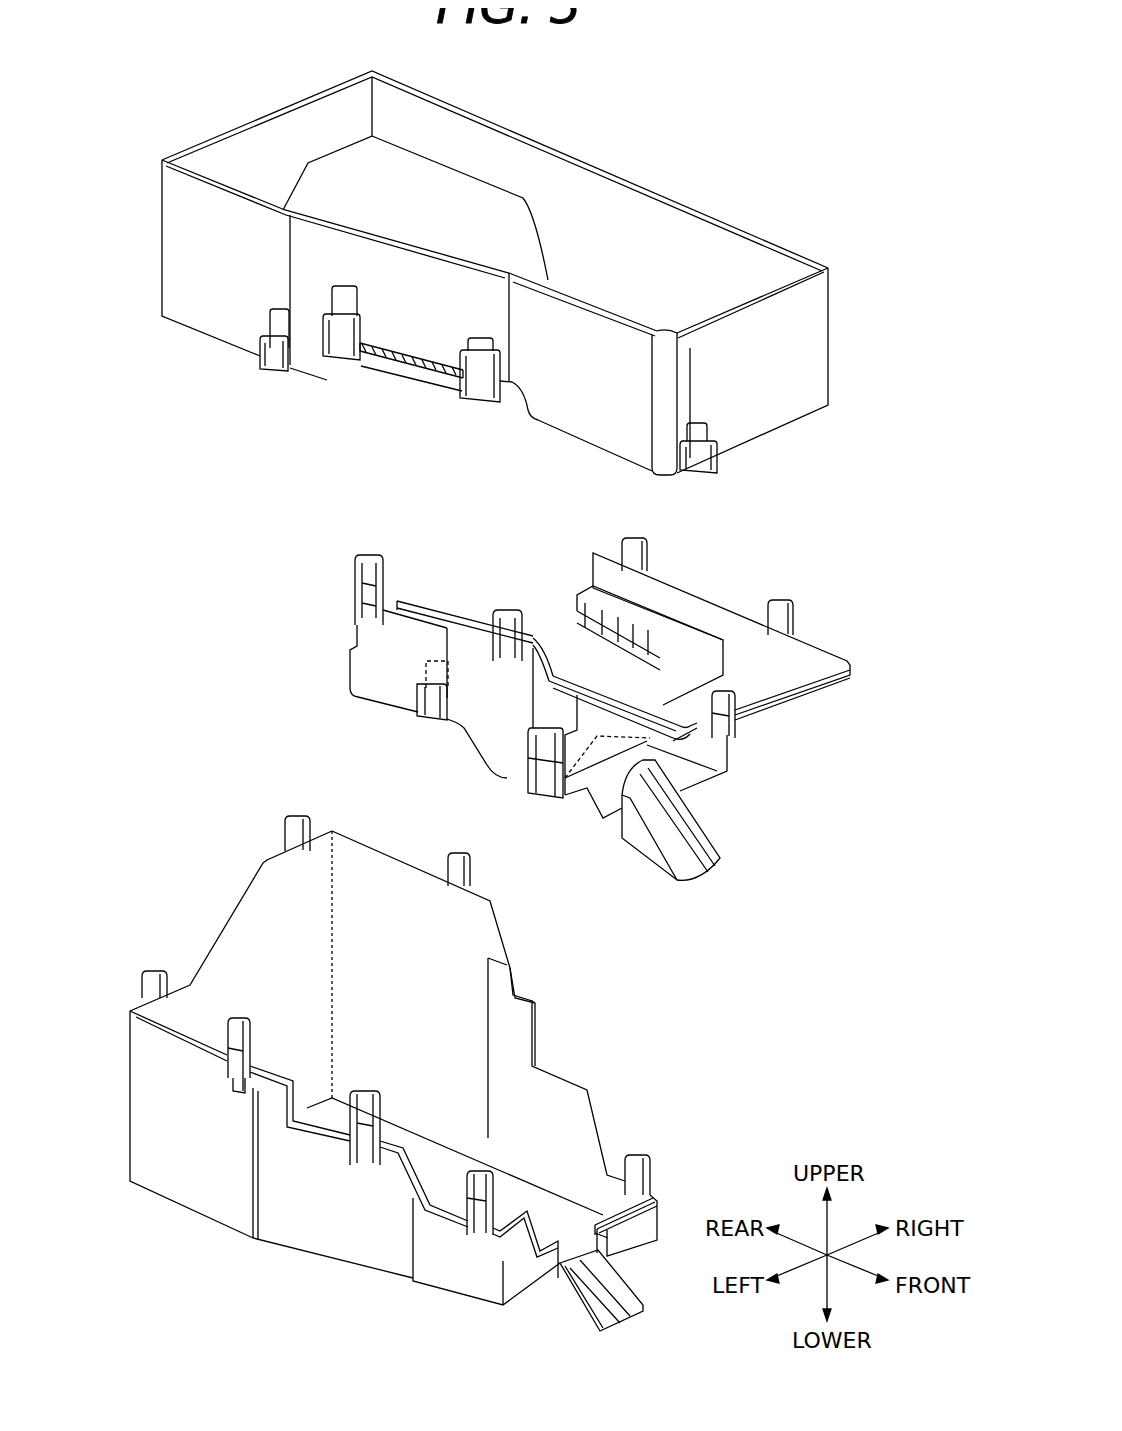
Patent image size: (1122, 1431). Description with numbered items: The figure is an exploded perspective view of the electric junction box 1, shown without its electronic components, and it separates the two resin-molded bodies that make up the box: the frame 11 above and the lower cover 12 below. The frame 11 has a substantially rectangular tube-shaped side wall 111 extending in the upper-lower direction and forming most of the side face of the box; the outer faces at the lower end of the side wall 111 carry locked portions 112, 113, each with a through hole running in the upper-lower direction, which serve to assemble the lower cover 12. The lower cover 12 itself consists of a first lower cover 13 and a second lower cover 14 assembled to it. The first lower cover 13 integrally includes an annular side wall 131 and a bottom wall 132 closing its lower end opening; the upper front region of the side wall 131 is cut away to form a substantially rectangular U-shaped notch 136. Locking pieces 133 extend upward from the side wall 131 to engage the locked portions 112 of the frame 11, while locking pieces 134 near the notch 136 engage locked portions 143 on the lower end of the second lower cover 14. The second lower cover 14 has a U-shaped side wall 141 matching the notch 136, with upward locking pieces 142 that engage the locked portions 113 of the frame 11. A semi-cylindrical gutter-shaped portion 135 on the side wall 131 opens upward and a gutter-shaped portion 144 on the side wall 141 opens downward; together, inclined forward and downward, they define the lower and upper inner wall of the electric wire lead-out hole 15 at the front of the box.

The electric junction box 1 is at (800, 76).
The frame 11 is at (157, 248).
The side wall 111 is at (790, 415).
The locked portion 112 is at (275, 380).
The locked portion 113 is at (345, 372).
The lower cover 12 is at (122, 643).
The first lower cover 13 is at (232, 908).
The side wall 131 is at (178, 1192).
The bottom wall 132 is at (553, 1213).
The locking piece 133 is at (296, 830).
The locking piece 134 is at (362, 1093).
The gutter-shaped portion 135 is at (590, 1318).
The notch 136 is at (533, 1033).
The second lower cover 14 is at (340, 658).
The side wall 141 is at (378, 682).
The locking piece 142 is at (368, 563).
The locked portion 143 is at (432, 700).
The gutter-shaped portion 144 is at (715, 860).
The electric wire lead-out hole 15 is at (647, 1056).